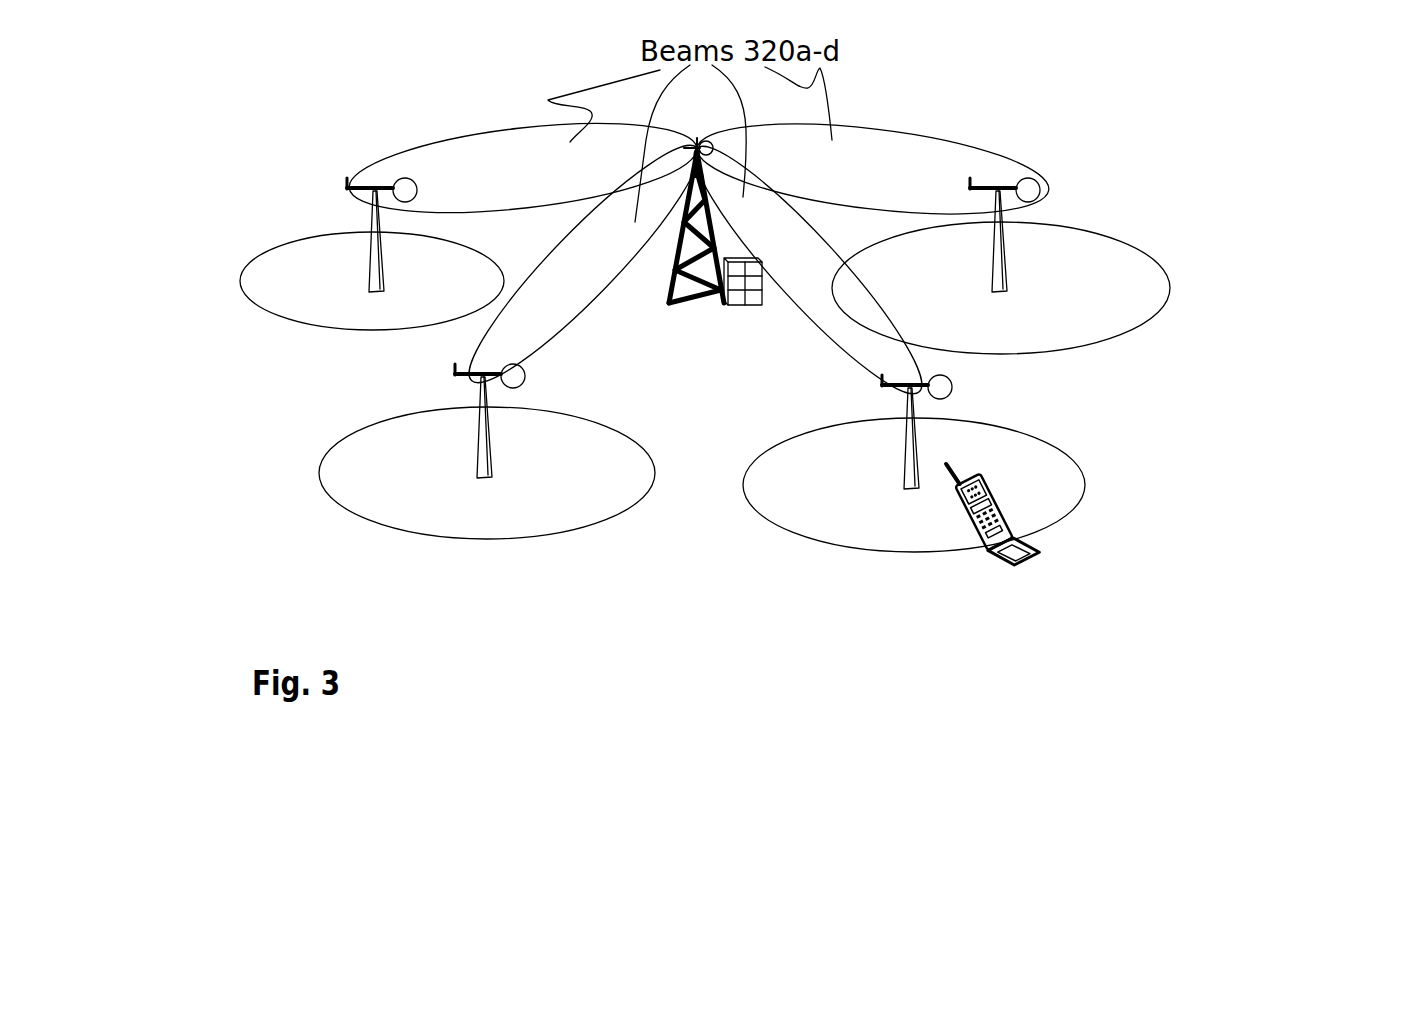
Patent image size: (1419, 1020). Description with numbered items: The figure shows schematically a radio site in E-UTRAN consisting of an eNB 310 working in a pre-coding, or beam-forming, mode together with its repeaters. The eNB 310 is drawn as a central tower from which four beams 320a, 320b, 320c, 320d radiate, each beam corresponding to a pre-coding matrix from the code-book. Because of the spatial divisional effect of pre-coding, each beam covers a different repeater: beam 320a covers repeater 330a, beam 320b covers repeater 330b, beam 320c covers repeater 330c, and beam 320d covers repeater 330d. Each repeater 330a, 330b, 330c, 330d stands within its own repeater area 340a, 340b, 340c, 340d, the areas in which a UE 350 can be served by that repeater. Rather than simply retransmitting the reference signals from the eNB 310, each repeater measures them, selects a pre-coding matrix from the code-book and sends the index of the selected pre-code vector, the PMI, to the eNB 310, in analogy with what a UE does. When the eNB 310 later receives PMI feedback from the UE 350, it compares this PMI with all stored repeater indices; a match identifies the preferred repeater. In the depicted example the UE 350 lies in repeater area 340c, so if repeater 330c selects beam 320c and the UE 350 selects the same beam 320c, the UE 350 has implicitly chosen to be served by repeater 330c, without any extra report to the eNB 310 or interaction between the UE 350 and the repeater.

The eNB 310 is at (728, 302).
The beam 320a is at (523, 168).
The beam 320b is at (583, 264).
The beam 320c is at (808, 270).
The beam 320d is at (873, 168).
The repeater 330a is at (372, 257).
The repeater 330b is at (482, 458).
The repeater 330c is at (908, 450).
The repeater 330d is at (997, 263).
The repeater area 340a is at (328, 263).
The repeater area 340b is at (350, 483).
The repeater area 340c is at (1050, 507).
The repeater area 340d is at (1117, 277).
The UE 350 is at (1028, 562).